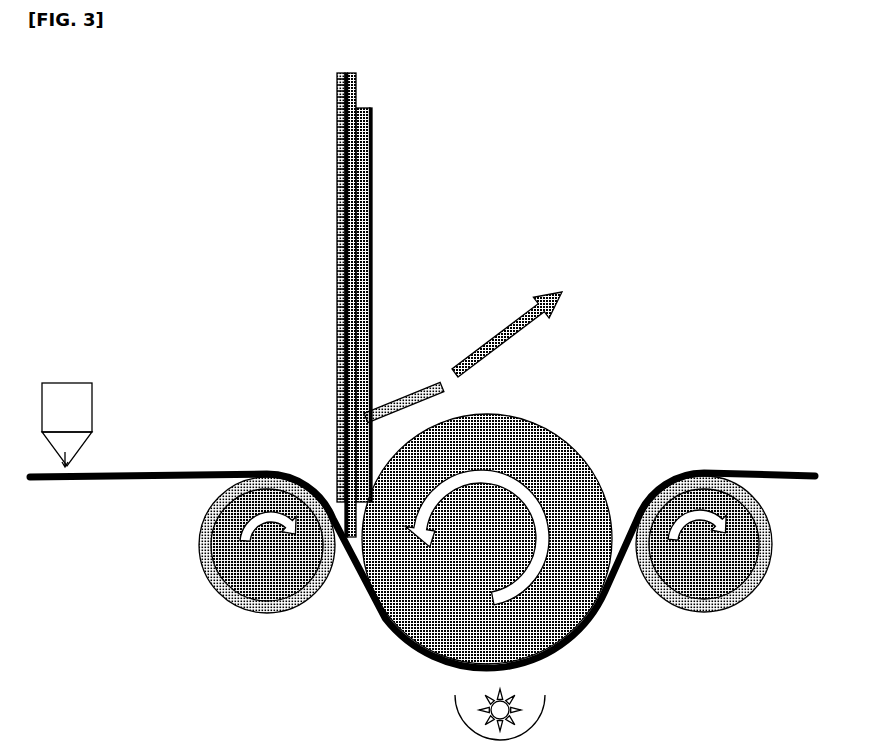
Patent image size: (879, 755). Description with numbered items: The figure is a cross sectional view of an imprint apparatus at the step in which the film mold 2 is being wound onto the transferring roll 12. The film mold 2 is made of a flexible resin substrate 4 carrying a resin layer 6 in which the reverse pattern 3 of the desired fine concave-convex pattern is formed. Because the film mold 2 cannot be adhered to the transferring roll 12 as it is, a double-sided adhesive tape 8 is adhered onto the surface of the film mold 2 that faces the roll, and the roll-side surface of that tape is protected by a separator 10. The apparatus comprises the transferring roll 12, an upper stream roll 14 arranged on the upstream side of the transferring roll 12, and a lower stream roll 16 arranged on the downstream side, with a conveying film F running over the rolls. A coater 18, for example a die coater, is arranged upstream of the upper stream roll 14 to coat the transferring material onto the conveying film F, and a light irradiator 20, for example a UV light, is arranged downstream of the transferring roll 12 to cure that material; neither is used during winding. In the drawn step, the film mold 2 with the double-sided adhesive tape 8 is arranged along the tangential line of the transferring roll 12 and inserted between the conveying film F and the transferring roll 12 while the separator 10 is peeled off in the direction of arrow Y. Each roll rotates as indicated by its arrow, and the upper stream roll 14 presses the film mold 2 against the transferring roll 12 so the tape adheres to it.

The film mold 2 is at (358, 290).
The reverse pattern 3 is at (337, 232).
The resin substrate 4 is at (349, 74).
The resin layer 6 is at (347, 73).
The double-sided adhesive tape 8 is at (358, 108).
The separator 10 is at (372, 142).
The transferring roll 12 is at (510, 418).
The upper stream roll 14 is at (256, 591).
The lower stream roll 16 is at (727, 588).
The coater 18 is at (76, 388).
The light irradiator 20 is at (560, 716).
The conveying film F is at (118, 476).
The arrow Y is at (507, 334).